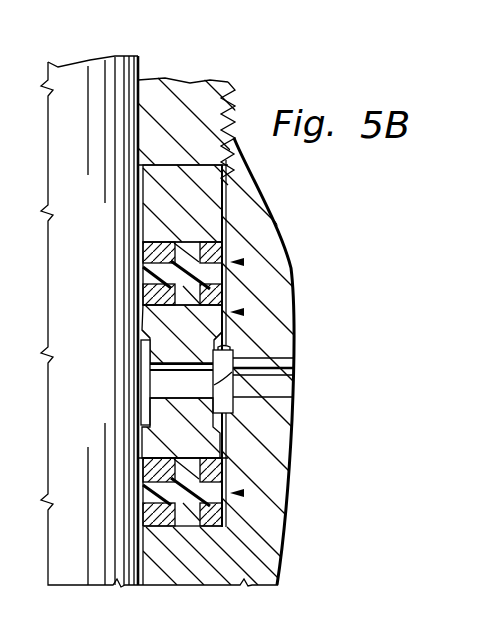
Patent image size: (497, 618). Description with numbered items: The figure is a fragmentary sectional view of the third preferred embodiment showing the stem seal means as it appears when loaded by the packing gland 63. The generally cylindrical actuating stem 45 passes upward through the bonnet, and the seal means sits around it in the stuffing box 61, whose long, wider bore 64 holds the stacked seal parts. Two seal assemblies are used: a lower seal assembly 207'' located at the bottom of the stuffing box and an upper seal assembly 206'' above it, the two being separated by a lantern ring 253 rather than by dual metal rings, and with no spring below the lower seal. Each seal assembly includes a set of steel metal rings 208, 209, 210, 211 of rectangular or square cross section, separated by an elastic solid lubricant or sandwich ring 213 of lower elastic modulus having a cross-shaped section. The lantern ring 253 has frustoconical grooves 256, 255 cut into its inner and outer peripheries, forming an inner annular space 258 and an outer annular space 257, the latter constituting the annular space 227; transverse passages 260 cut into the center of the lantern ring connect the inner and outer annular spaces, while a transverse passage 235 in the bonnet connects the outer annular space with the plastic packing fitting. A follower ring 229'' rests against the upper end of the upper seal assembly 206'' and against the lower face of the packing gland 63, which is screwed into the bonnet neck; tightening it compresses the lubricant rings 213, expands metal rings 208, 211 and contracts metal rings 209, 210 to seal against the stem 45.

The actuating stem 45 is at (98, 72).
The packing gland 63 is at (195, 92).
The follower ring 229'' is at (247, 203).
The metal ring 208 is at (225, 247).
The upper seal assembly 206'' is at (258, 273).
The metal ring 209 is at (145, 255).
The lubricant ring 213 is at (139, 273).
The metal ring 210 is at (148, 295).
The metal ring 211 is at (232, 290).
The stuffing box 61 is at (244, 312).
The outer frustoconical groove 255 is at (233, 338).
The inner frustoconical groove 256 is at (147, 346).
The inner annular space 258 is at (146, 360).
The transverse passages 260 is at (157, 387).
The transverse passage 235 is at (295, 370).
The outer annular space 257 is at (294, 386).
The wide bore 64 is at (232, 352).
The annular space 227 is at (232, 412).
The lantern ring 253 is at (197, 444).
The lower seal assembly 207'' is at (259, 492).